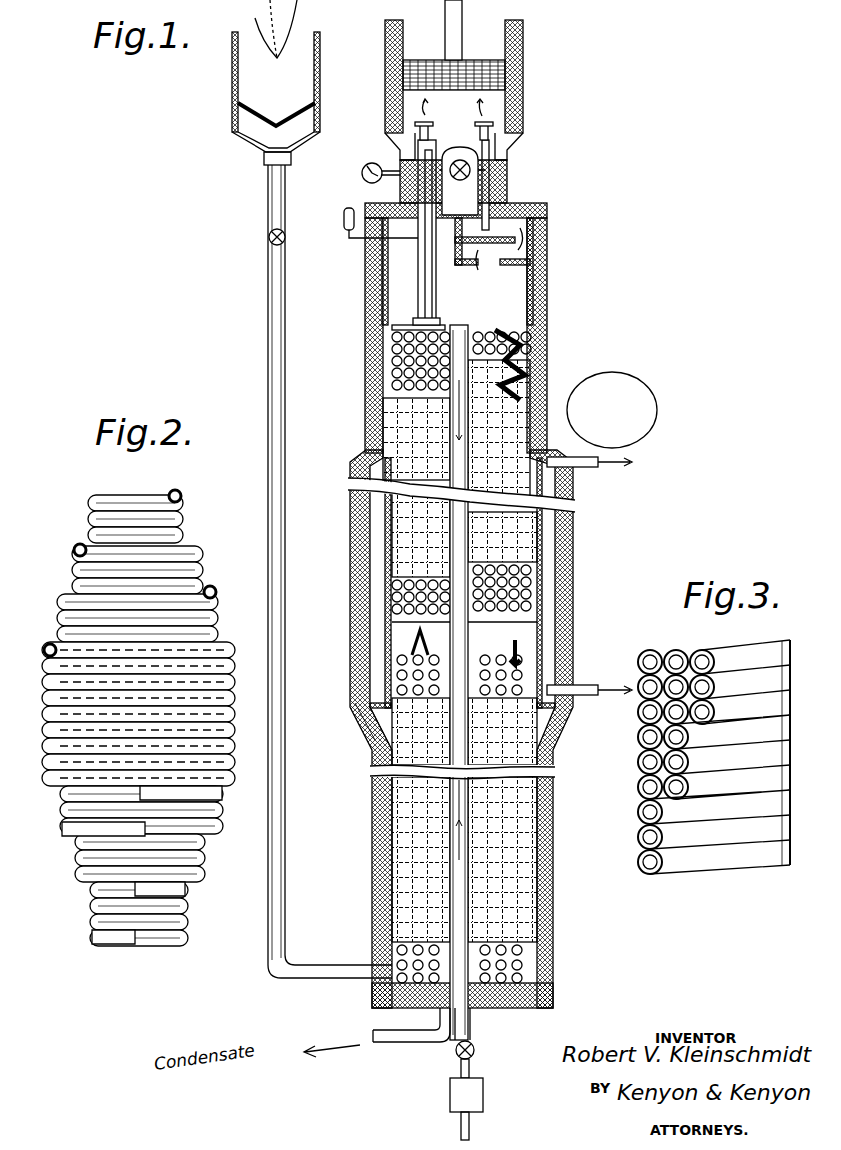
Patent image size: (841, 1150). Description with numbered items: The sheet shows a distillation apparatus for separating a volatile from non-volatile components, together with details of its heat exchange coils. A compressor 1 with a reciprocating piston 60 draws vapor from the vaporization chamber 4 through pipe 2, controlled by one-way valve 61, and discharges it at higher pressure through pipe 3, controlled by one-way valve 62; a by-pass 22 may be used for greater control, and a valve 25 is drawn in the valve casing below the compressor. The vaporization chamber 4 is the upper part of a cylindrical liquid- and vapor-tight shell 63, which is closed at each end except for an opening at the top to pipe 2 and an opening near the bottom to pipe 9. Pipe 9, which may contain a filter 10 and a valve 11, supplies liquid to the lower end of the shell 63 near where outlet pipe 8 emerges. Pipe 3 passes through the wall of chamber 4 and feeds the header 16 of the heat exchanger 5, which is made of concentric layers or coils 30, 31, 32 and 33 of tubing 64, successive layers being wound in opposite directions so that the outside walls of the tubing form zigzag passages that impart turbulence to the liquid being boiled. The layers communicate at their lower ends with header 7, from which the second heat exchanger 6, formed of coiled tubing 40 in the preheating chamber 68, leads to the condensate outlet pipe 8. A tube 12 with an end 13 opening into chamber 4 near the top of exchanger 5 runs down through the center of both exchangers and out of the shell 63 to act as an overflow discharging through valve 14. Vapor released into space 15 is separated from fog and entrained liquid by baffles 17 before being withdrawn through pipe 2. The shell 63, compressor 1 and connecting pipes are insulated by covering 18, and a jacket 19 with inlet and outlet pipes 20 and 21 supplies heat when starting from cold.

In FIG. 1, the compressor 1 is at (536, 86).
In FIG. 1, the pipe 2 is at (507, 180).
In FIG. 1, the pipe 3 is at (420, 157).
In FIG. 1, the vaporization chamber 4 is at (547, 305).
In FIG. 1, the heat exchanger 5 is at (495, 418).
In FIG. 1, the second heat exchanger 6 is at (512, 848).
In FIG. 1, the header 7 is at (540, 650).
In FIG. 1, the outlet pipe 8 is at (415, 1046).
In FIG. 1, the pipe 9 is at (333, 970).
In FIG. 1, the filter 10 is at (252, 101).
In FIG. 1, the valve 11 is at (268, 237).
In FIG. 1, the tube 12 is at (395, 652).
In FIG. 1, the end of tube 13 is at (458, 325).
In FIG. 1, the valve 14 is at (522, 1055).
In FIG. 1, the space 15 is at (397, 262).
In FIG. 1, the header 16 is at (407, 326).
In FIG. 1, the baffles 17 is at (510, 268).
In FIG. 1, the covering 18 is at (548, 230).
In FIG. 1, the jacket 19 is at (566, 552).
In FIG. 1, the inlet pipe 20 is at (582, 708).
In FIG. 1, the outlet pipe 21 is at (590, 470).
In FIG. 1, the by-pass 22 is at (490, 187).
In FIG. 1, the valve 25 is at (503, 160).
In FIG. 2, the coil layer 30 is at (180, 496).
In FIG. 2, the coil layer 31 is at (200, 554).
In FIG. 2, the coil layer 32 is at (217, 594).
In FIG. 2, the coil layer 33 is at (224, 648).
In FIG. 1, the coiled tubing 40 is at (362, 734).
In FIG. 1, the reciprocating piston 60 is at (505, 52).
In FIG. 1, the one-way valve 61 is at (490, 120).
In FIG. 1, the one-way valve 62 is at (415, 126).
In FIG. 1, the shell 63 is at (530, 382).
In FIG. 2, the tubing 64 is at (70, 838).
In FIG. 3, the tubing 64 is at (655, 873).
In FIG. 1, the preheating chamber 68 is at (545, 932).